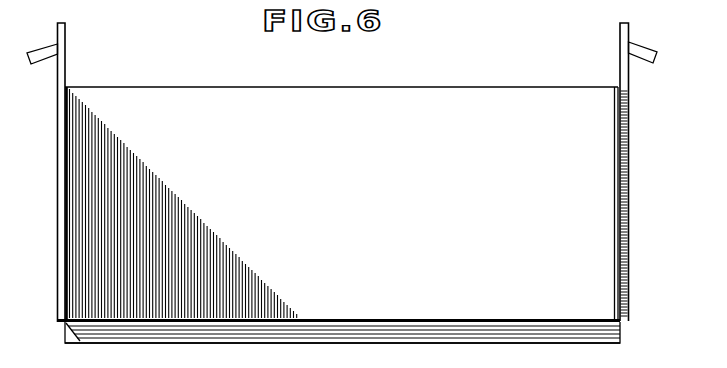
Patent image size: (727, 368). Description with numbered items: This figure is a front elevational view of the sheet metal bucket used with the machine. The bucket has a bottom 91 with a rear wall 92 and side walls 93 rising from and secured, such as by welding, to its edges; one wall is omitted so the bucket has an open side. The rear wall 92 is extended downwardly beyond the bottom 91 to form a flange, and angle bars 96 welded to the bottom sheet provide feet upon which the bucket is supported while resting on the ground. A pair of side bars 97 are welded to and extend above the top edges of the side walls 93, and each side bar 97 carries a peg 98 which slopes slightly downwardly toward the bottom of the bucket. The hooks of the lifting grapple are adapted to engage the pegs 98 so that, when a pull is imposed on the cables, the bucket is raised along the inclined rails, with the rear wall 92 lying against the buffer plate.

The bottom 91 is at (484, 318).
The rear wall 92 is at (372, 131).
The side walls 93 is at (67, 189).
The angle bars 96 is at (602, 337).
The side bars 97 is at (60, 157).
The peg 98 is at (43, 54).